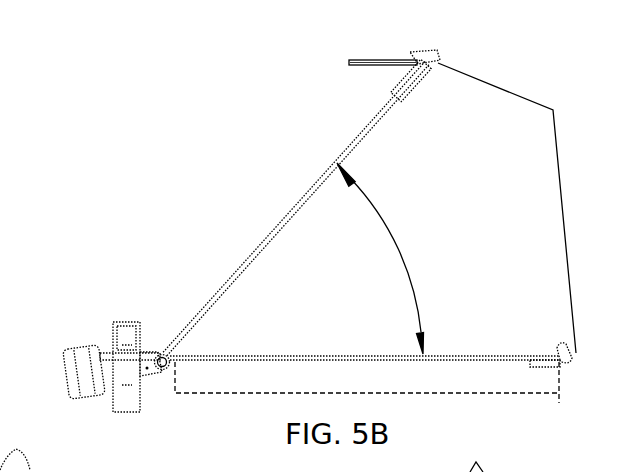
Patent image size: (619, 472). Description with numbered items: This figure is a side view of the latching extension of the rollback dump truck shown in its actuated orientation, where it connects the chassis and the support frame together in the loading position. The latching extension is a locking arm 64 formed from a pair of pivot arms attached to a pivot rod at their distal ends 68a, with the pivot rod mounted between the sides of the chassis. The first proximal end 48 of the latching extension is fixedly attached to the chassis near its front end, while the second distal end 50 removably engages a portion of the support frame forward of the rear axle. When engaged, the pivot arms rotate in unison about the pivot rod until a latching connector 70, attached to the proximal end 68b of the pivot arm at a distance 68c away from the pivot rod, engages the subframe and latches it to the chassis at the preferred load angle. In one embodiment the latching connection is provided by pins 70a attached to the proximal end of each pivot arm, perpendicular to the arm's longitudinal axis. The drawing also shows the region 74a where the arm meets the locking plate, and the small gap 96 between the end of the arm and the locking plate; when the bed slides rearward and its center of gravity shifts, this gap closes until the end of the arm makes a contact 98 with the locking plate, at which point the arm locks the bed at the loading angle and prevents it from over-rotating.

The first proximal end 48 is at (168, 351).
The second distal end 50 is at (400, 87).
The locking arm 64 is at (247, 260).
The distal ends of pivot arms 68a is at (560, 357).
The proximal end of pivot arm 68b is at (160, 367).
The distance 68c is at (248, 395).
The latching connector 70 is at (48, 317).
The pins 70a is at (481, 457).
The bar 74a is at (350, 63).
The small gap 96 is at (12, 157).
The contact 98 is at (418, 61).